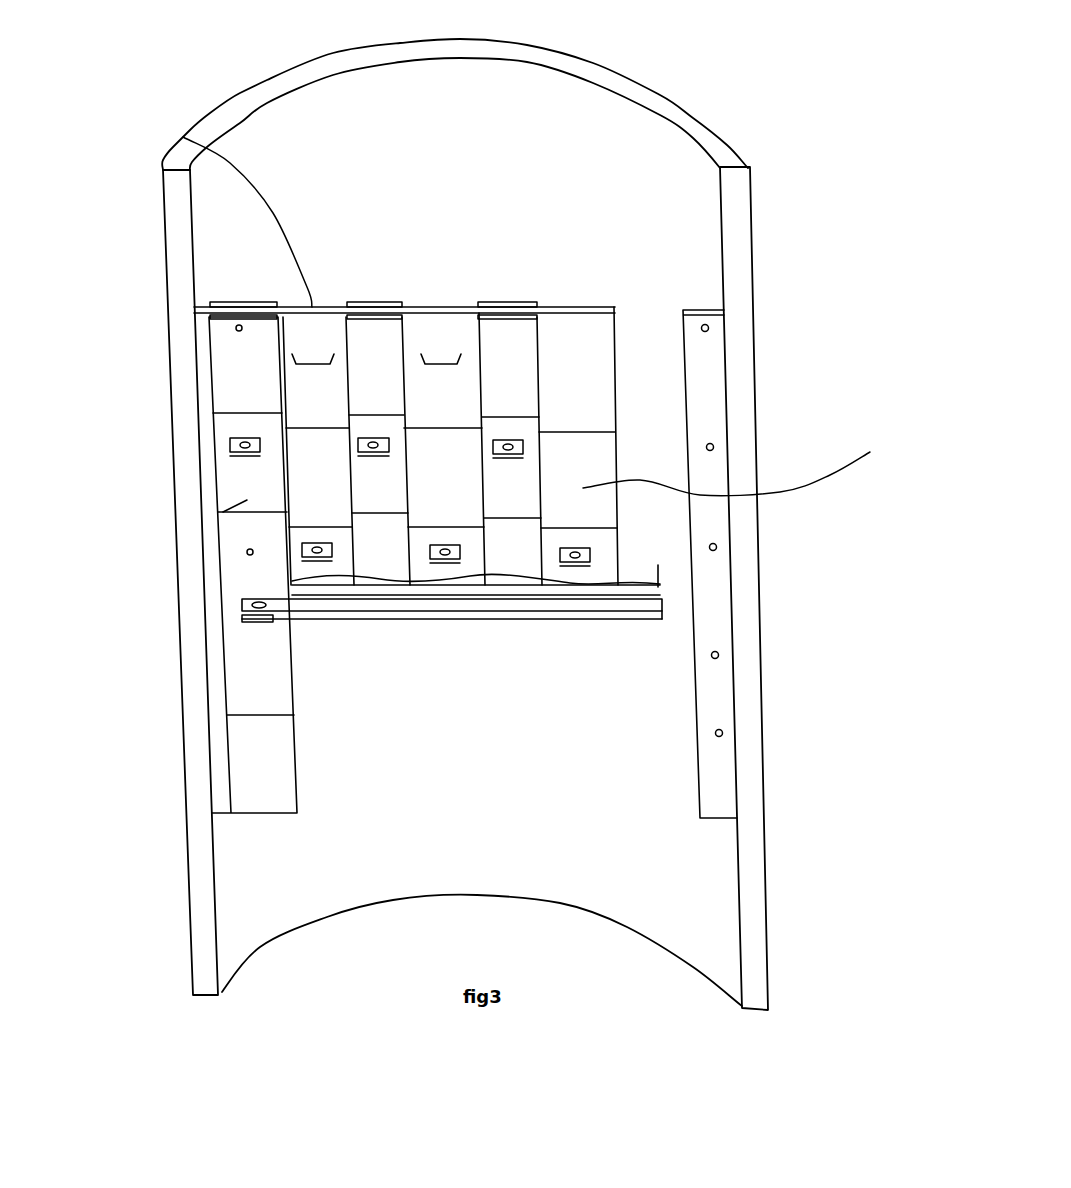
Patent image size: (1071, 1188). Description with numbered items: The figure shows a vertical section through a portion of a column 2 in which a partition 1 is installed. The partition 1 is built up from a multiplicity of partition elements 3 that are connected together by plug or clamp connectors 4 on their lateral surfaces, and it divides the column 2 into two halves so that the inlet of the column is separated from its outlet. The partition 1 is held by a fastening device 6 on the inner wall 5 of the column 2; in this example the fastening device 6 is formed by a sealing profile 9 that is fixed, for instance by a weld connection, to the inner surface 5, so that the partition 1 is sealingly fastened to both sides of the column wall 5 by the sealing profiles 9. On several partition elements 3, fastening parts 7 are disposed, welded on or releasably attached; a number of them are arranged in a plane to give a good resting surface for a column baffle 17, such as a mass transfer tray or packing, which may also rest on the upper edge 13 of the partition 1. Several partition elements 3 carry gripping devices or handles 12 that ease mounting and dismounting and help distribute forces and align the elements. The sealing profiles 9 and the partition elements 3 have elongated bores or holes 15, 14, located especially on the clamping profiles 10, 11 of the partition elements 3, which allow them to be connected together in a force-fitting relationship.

The partition 1 is at (567, 363).
The column 2 is at (567, 120).
The partition element 3 is at (510, 387).
The plug or clamp connector 4 is at (227, 302).
The inner wall of the column 5 is at (215, 898).
The fastening device 6 is at (193, 402).
The fastening part 7 is at (358, 453).
The sealing profile 9 is at (203, 357).
The clamping profile 10 is at (220, 513).
The clamping profile 11 is at (253, 303).
The gripping device 12 is at (440, 362).
The upper edge of the partition 13 is at (183, 137).
The bore or hole 14 is at (236, 330).
The bore or hole 15 is at (718, 655).
The column baffle 17 is at (638, 591).